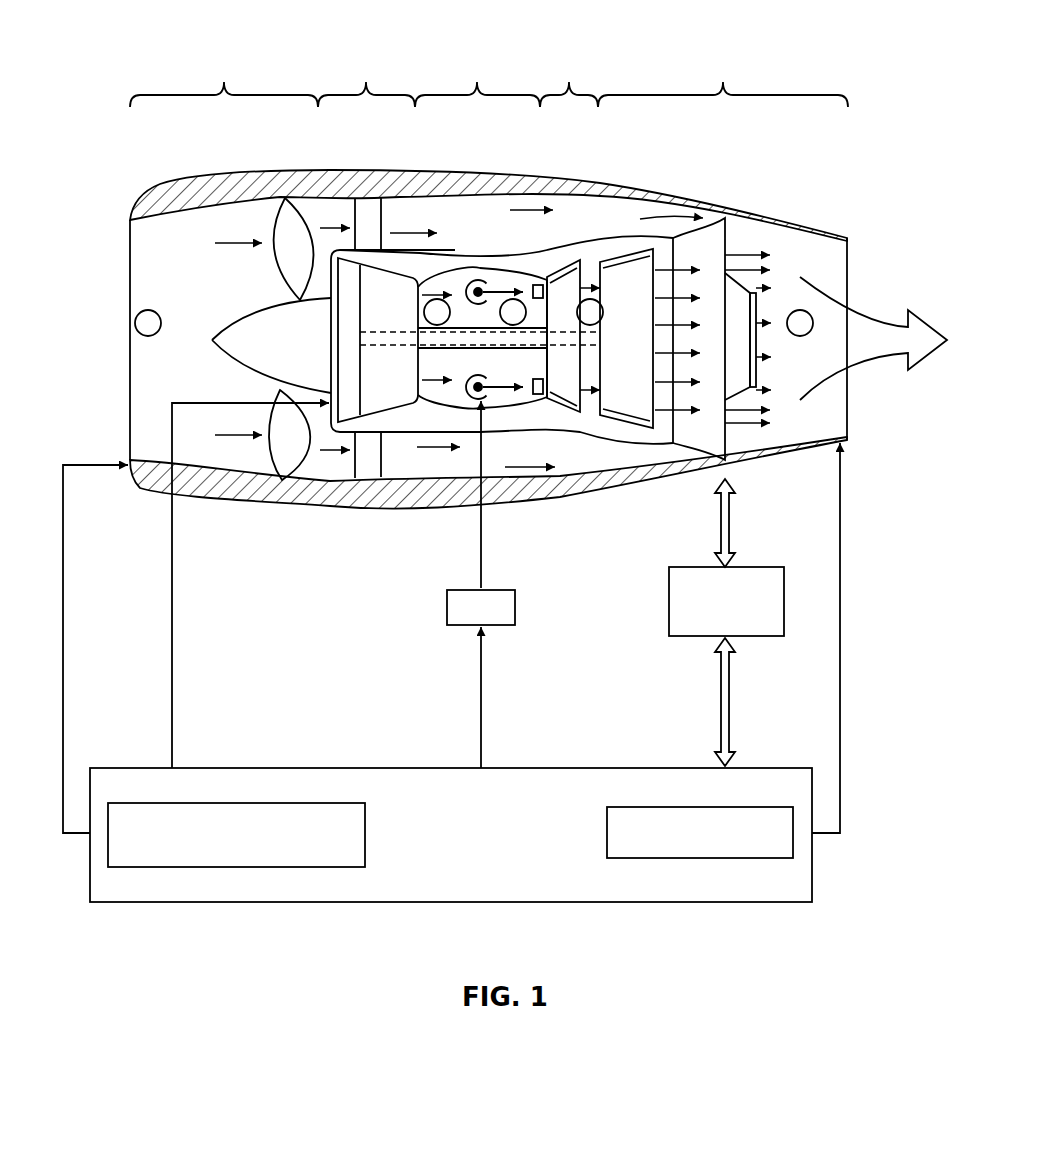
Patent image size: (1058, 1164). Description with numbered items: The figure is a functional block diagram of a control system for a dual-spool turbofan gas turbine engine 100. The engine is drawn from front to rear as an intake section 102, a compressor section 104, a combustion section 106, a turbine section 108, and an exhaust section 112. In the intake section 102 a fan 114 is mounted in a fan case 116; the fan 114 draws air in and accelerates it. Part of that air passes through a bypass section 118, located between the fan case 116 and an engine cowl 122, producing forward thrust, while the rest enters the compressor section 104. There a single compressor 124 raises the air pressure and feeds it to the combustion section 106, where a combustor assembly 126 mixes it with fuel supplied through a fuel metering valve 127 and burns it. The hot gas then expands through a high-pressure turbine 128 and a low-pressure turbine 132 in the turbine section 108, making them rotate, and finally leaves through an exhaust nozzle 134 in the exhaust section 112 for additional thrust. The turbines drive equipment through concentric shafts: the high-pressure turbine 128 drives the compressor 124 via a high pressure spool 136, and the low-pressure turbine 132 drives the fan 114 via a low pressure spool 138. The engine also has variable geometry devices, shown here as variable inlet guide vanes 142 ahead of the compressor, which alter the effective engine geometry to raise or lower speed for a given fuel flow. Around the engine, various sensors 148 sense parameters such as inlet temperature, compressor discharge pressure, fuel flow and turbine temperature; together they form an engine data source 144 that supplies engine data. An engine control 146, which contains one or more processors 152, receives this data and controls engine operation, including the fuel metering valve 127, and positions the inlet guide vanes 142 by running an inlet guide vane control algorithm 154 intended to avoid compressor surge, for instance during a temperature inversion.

The gas turbine engine 100 is at (122, 52).
The intake section 102 is at (224, 80).
The compressor section 104 is at (366, 80).
The combustion section 106 is at (477, 80).
The turbine section 108 is at (569, 80).
The exhaust section 112 is at (723, 80).
The fan 114 is at (257, 351).
The fan case 116 is at (275, 172).
The bypass section 118 is at (480, 205).
The engine cowl 122 is at (428, 287).
The compressor 124 is at (367, 311).
The combustor assembly 126 is at (478, 280).
The fuel metering valve 127 is at (470, 590).
The high-pressure turbine 128 is at (565, 270).
The low-pressure turbine 132 is at (627, 252).
The exhaust nozzle 134 is at (850, 277).
The high pressure spool 136 is at (432, 350).
The low pressure spool 138 is at (500, 349).
The variable inlet guide vanes 142 is at (333, 298).
The engine data source 144 is at (700, 567).
The engine control 146 is at (162, 768).
The sensors 148 is at (147, 310).
The processors 152 is at (677, 807).
The inlet guide vane control algorithm 154 is at (175, 803).